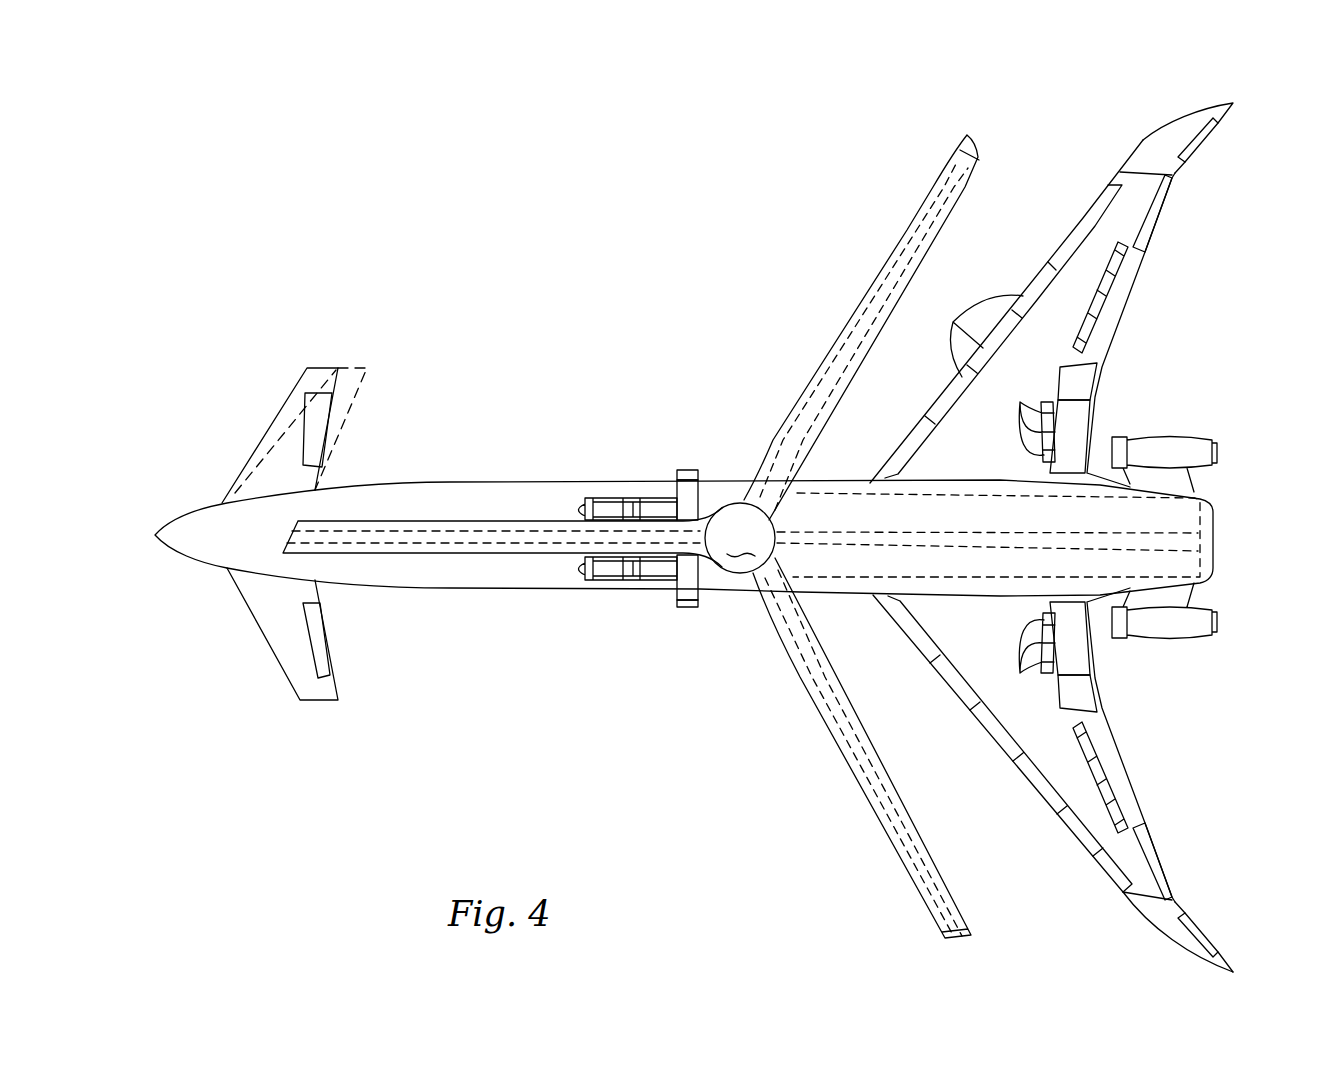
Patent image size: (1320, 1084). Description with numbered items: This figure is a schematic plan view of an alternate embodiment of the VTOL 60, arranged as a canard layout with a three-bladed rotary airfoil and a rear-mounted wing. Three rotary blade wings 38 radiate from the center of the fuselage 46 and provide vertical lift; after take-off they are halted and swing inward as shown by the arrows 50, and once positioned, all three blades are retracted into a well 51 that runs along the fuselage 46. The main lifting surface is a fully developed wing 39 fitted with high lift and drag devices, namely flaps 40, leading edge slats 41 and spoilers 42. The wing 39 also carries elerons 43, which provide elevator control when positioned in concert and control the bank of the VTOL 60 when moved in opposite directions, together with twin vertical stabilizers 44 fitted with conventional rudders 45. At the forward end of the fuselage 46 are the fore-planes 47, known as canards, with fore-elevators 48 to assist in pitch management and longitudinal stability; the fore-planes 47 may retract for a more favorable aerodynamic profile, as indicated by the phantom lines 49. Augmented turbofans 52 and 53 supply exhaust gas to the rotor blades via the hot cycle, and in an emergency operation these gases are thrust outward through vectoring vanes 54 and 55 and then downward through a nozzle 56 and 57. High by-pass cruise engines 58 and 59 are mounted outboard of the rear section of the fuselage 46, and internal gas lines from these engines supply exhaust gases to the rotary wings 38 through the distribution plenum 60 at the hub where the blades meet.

The rotary blade wings 38 is at (413, 530).
The wing 39 is at (1083, 260).
The flaps 40 is at (1123, 292).
The leading edge slats 41 is at (953, 322).
The spoilers 42 is at (1020, 402).
The elerons 43 is at (1147, 227).
The twin vertical stabilizers 44 is at (1157, 148).
The rudders 45 is at (1213, 150).
The fuselage 46 is at (497, 493).
The fore-planes 47 is at (300, 410).
The fore-elevators 48 is at (320, 430).
The phantom lines 49 is at (355, 392).
The arrows 50 is at (985, 256).
The well 51 is at (493, 557).
The augmented turbofan 52 is at (605, 500).
The augmented turbofan 53 is at (603, 578).
The vectoring vane 54 is at (692, 507).
The vectoring vane 55 is at (683, 570).
The nozzle 56 is at (692, 608).
The nozzle 57 is at (690, 470).
The high by-pass cruise engine 58 is at (1198, 445).
The high by-pass cruise engine 59 is at (1195, 637).
The VTOL / distribution plenum 60 is at (276, 247).